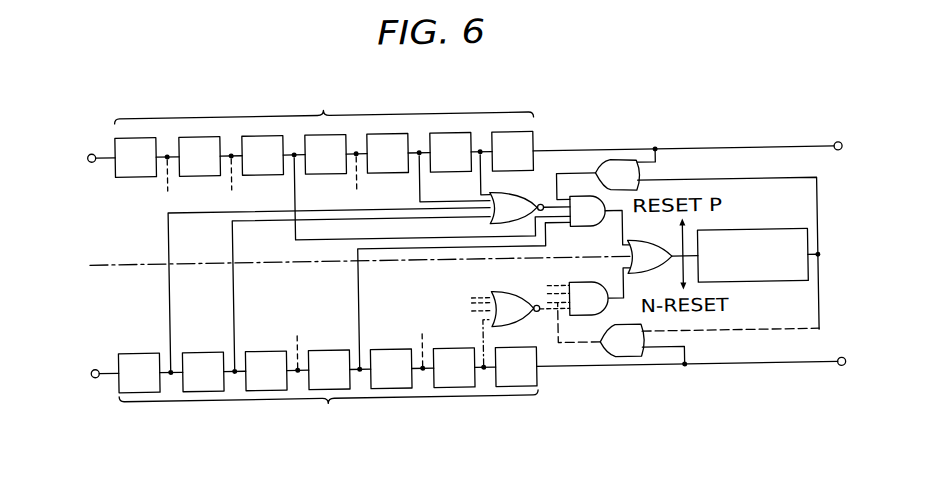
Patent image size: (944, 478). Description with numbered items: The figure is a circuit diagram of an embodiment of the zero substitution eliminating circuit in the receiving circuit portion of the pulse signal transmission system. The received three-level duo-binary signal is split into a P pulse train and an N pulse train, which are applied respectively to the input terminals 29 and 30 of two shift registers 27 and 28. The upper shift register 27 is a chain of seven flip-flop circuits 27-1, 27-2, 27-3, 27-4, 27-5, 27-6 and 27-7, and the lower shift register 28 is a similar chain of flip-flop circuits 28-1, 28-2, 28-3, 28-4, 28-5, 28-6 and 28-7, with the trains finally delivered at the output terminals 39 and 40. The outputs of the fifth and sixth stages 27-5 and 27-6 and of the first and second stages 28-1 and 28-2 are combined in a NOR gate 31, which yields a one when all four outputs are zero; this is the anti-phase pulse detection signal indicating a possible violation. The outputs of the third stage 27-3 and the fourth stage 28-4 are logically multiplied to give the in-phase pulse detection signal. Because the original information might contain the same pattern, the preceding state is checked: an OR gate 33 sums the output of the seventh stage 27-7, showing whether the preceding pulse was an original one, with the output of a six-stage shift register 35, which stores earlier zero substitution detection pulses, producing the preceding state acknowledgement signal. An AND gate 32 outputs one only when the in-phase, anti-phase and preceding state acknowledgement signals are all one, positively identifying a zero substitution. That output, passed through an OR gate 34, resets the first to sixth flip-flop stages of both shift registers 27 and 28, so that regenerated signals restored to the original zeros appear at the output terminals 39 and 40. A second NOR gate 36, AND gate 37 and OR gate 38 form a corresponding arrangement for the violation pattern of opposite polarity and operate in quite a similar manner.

The shift register 27 is at (337, 100).
The first stage flip-flop circuit 27-1 is at (139, 172).
The second stage flip-flop circuit 27-2 is at (202, 172).
The third stage flip-flop circuit 27-3 is at (266, 172).
The fourth stage flip-flop circuit 27-4 is at (329, 172).
The fifth stage flip-flop circuit 27-5 is at (390, 172).
The sixth stage flip-flop circuit 27-6 is at (448, 172).
The seventh stage flip-flop circuit 27-7 is at (535, 135).
The shift register 28 is at (338, 425).
The first stage flip-flop circuit 28-1 is at (136, 347).
The second stage flip-flop circuit 28-2 is at (200, 347).
The third stage flip-flop circuit 28-3 is at (263, 347).
The fourth stage flip-flop circuit 28-4 is at (327, 347).
The fifth stage flip-flop circuit 28-5 is at (387, 347).
The sixth stage flip-flop circuit 28-6 is at (449, 347).
The seventh stage flip-flop circuit 28-7 is at (535, 388).
The input terminal 29 is at (94, 148).
The input terminal 30 is at (94, 372).
The NOR gate 31 is at (514, 225).
The AND gate 32 is at (591, 229).
The OR gate 33 is at (612, 161).
The OR gate 34 is at (641, 243).
The shift register 35 is at (770, 234).
The NOR gate 36 is at (498, 292).
The AND gate 37 is at (585, 284).
The OR gate 38 is at (625, 360).
The output terminal 39 is at (839, 148).
The output terminal 40 is at (840, 372).